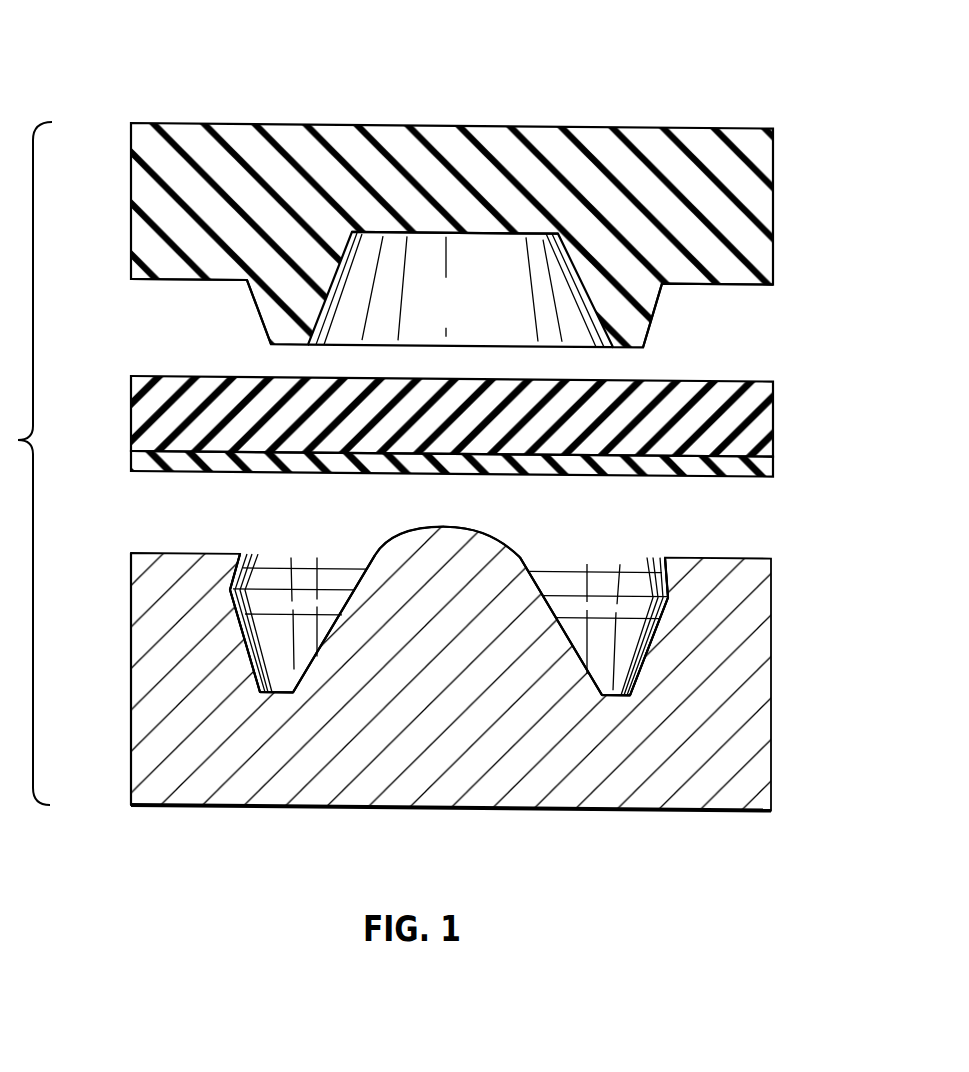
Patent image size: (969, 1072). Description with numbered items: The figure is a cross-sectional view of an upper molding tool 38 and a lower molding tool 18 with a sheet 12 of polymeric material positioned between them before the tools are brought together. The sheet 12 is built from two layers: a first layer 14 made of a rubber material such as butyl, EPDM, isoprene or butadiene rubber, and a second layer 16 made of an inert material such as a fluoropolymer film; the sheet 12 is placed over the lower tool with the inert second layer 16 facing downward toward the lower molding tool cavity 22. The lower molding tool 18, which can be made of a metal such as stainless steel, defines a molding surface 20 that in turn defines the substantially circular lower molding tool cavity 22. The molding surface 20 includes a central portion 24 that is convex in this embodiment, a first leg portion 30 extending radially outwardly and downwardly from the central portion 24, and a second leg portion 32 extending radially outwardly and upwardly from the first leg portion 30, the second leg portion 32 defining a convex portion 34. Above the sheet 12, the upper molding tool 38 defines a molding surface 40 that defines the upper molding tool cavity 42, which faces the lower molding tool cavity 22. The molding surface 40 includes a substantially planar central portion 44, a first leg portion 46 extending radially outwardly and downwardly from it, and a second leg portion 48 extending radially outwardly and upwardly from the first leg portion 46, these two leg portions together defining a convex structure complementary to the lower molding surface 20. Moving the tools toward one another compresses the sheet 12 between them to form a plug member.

The sheet 12 is at (131, 418).
The first layer 14 is at (776, 409).
The second layer 16 is at (776, 476).
The lower molding tool 18 is at (773, 690).
The molding surface 20 is at (349, 598).
The lower molding tool cavity 22 is at (277, 603).
The central portion 24 is at (445, 528).
The first leg portion 30 is at (318, 657).
The second leg portion 32 is at (257, 668).
The convex portion 34 is at (228, 590).
The upper molding tool 38 is at (776, 216).
The molding surface 40 is at (329, 322).
The upper molding tool cavity 42 is at (473, 317).
The central portion 44 is at (465, 232).
The first leg portion 46 is at (336, 262).
The second leg portion 48 is at (254, 296).